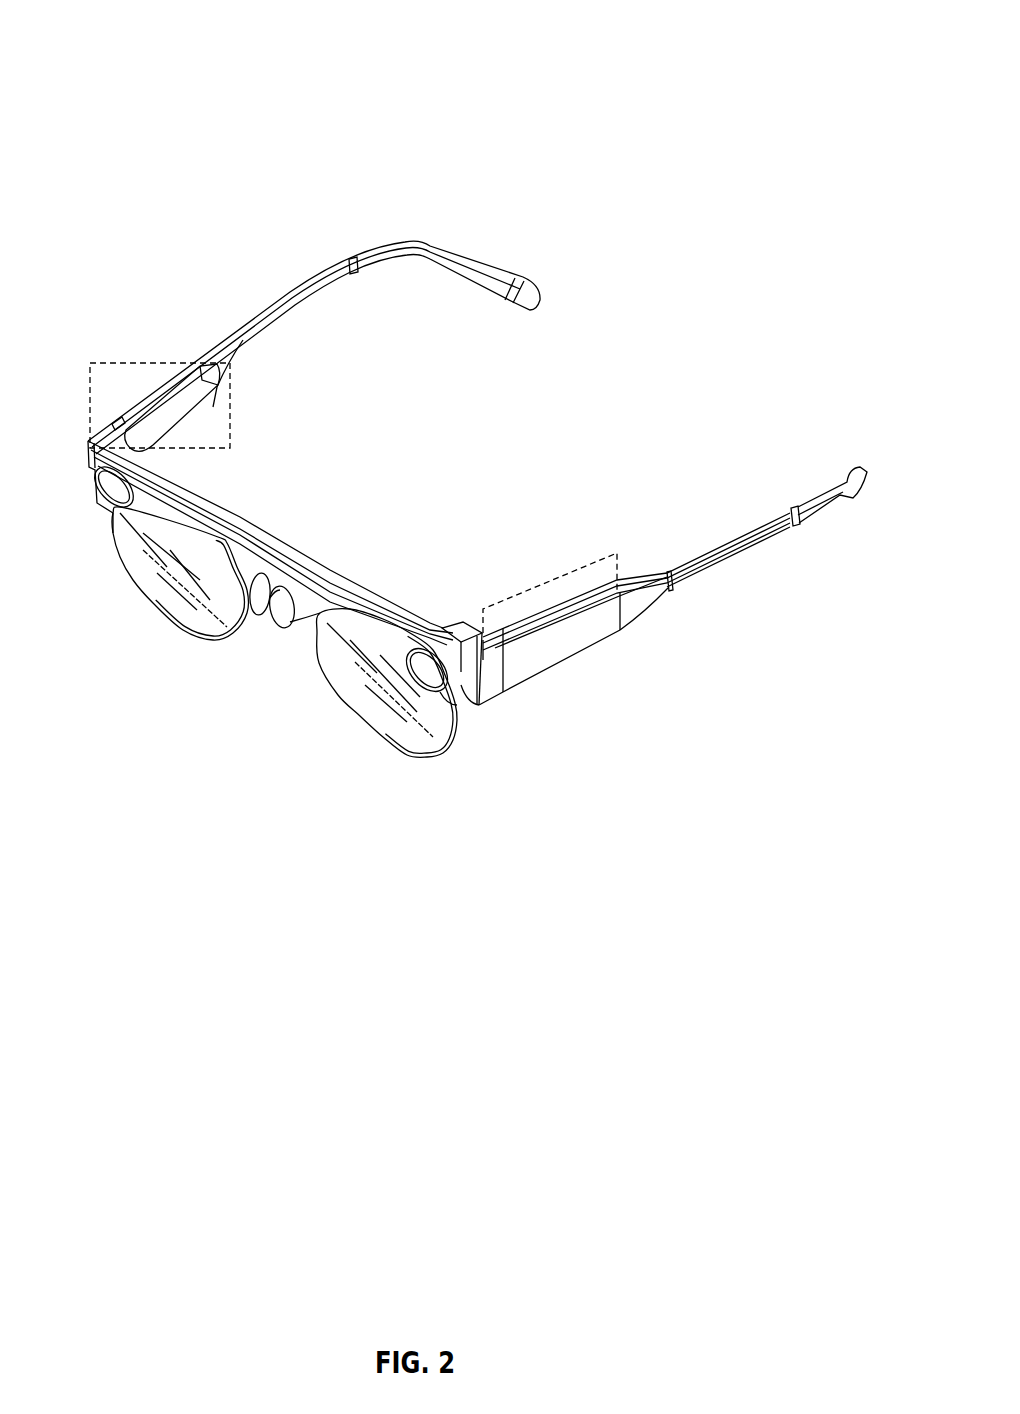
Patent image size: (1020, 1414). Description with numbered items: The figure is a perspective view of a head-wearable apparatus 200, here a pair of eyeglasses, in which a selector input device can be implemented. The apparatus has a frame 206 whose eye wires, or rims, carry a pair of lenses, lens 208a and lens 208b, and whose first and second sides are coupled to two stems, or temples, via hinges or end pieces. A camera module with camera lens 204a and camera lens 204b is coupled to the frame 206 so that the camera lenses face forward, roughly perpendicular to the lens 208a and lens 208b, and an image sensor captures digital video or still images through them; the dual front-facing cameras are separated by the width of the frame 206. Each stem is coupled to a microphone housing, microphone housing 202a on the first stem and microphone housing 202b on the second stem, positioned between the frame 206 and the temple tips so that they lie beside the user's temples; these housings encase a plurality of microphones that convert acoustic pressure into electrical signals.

The head-wearable apparatus 200 is at (801, 52).
The microphone housing 202a is at (116, 360).
The microphone housing 202b is at (552, 577).
The camera lens 204a is at (104, 499).
The camera lens 204b is at (468, 703).
The frame 206 is at (123, 557).
The lens 208a is at (180, 606).
The lens 208b is at (345, 689).